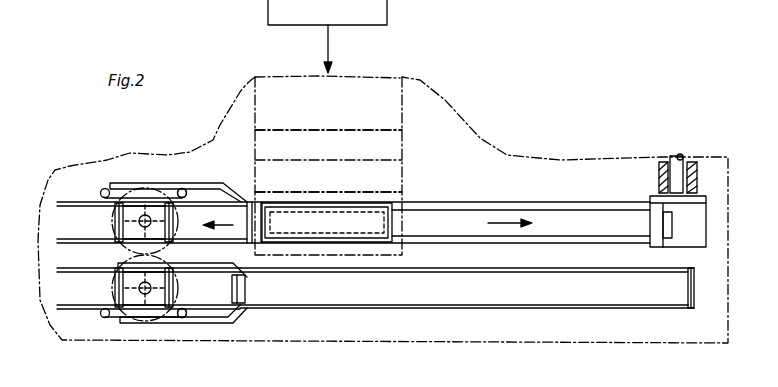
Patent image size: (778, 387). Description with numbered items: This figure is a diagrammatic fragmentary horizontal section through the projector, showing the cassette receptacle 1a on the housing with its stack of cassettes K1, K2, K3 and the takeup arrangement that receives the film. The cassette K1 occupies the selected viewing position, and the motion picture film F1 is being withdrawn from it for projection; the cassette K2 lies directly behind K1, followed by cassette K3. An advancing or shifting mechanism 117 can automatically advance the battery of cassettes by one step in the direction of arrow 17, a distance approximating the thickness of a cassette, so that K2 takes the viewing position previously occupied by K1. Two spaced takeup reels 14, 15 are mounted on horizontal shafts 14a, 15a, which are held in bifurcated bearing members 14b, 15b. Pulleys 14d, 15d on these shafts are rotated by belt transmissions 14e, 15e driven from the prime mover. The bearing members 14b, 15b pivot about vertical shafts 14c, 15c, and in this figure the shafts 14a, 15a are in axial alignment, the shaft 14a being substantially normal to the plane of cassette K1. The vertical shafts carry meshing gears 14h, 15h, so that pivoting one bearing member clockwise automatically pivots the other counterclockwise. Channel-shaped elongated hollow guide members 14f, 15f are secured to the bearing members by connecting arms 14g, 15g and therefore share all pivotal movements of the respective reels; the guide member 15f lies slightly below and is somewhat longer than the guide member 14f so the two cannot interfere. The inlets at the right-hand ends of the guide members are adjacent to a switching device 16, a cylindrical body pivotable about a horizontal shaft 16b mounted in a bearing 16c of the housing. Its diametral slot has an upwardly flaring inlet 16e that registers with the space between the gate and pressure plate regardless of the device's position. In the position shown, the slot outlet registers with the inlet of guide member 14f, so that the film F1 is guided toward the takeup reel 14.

The advancing or shifting mechanism 117 is at (388, 10).
The arrow 17 is at (331, 51).
The receptacle or supporting means 1a is at (253, 107).
The takeup reel 14 is at (60, 195).
The horizontal shaft 14a is at (137, 182).
The bifurcated bearing member 14b is at (145, 195).
The vertical shaft 14c is at (101, 192).
The pulley 14d is at (183, 188).
The belt transmission 14e is at (195, 187).
The channel-shaped elongated hollow guide member 14f is at (465, 240).
The connecting arm 14g is at (245, 190).
The gear 14h is at (112, 224).
The takeup reel 15 is at (139, 289).
The horizontal shaft 15a is at (135, 322).
The bifurcated bearing member 15b is at (182, 318).
The vertical shaft 15c is at (104, 316).
The pulley 15d is at (177, 316).
The belt transmission 15e is at (203, 326).
The channel-shaped elongated hollow guide member 15f is at (563, 302).
The connecting arm 15g is at (247, 308).
The gear 15h is at (112, 287).
The switching device 16 is at (697, 227).
The horizontal shaft 16b is at (678, 155).
The bearing 16c is at (697, 180).
The inlet 16e is at (665, 248).
The cassette K1 is at (402, 193).
The cassette K2 is at (397, 155).
The cassette K3 is at (410, 115).
The motion picture film F1 is at (463, 220).